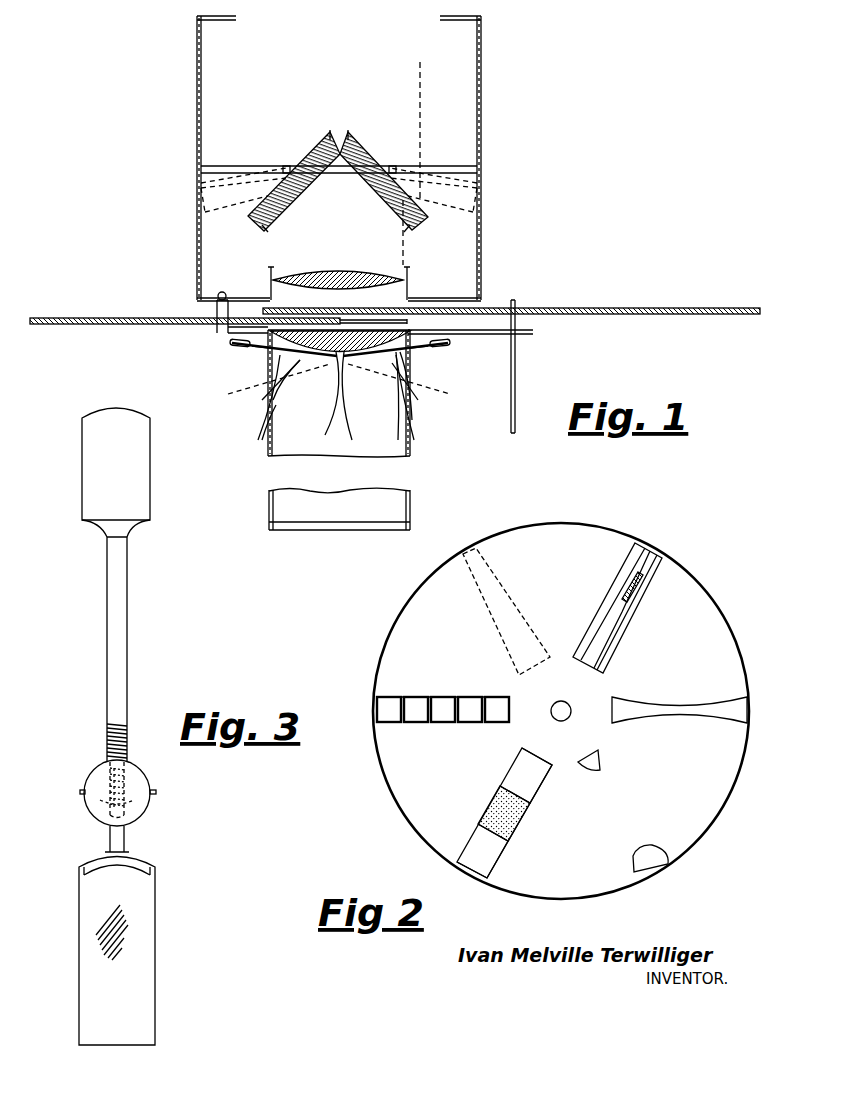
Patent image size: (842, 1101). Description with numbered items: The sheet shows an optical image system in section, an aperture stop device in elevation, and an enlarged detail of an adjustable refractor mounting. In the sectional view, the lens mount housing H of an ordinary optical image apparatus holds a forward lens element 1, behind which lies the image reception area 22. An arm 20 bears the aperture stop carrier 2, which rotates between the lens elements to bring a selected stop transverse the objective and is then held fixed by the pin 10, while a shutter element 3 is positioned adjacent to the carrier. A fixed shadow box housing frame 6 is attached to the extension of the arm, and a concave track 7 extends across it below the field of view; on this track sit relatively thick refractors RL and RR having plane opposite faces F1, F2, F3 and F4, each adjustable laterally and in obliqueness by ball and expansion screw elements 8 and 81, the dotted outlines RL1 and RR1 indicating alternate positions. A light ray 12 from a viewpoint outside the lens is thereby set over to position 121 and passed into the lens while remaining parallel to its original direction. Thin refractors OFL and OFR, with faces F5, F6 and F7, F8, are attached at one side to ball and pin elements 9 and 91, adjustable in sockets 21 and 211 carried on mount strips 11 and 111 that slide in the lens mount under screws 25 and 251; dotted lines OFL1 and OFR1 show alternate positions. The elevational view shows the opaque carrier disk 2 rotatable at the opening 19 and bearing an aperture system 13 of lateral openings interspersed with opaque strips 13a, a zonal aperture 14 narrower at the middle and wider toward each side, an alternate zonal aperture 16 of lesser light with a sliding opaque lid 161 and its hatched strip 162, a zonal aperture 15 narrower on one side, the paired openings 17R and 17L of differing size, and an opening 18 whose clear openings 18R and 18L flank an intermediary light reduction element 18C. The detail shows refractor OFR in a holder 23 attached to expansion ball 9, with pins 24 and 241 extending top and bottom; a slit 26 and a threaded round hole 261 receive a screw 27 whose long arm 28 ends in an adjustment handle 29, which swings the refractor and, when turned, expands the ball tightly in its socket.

In FIG. 1, the forward lens element 1 is at (370, 278).
In FIG. 1, the aperture stop carrier 2 is at (92, 318).
In FIG. 2, the aperture stop carrier 2 is at (436, 583).
In FIG. 1, the shutter element 3 is at (688, 308).
In FIG. 1, the shadow box housing frame 6 is at (197, 86).
In FIG. 1, the concave track 7 is at (240, 170).
In FIG. 1, the ball and expansion screw element 8 is at (410, 150).
In FIG. 1, the ball and expansion screw element 81 is at (286, 166).
In FIG. 1, the expansion ball 9 is at (445, 343).
In FIG. 3, the expansion ball 9 is at (98, 812).
In FIG. 1, the ball and pin element 91 is at (240, 345).
In FIG. 1, the pin 10 is at (213, 312).
In FIG. 1, the mount strip 11 is at (416, 358).
In FIG. 1, the mount strip 111 is at (268, 357).
In FIG. 1, the light ray 12 is at (423, 118).
In FIG. 1, the refracted light ray position 121 is at (405, 262).
In FIG. 2, the aperture system 13 is at (385, 712).
In FIG. 2, the opaque strips 13a is at (390, 705).
In FIG. 2, the zonal aperture 14 is at (712, 712).
In FIG. 2, the zonal aperture 15 is at (493, 598).
In FIG. 2, the alternate zonal aperture 16 is at (656, 568).
In FIG. 2, the lid 161 is at (623, 610).
In FIG. 2, the hatched strip of slot 162 is at (637, 541).
In FIG. 2, the aperture opening 17L is at (600, 762).
In FIG. 2, the aperture opening 17R is at (648, 858).
In FIG. 2, the aperture stop opening 18 is at (481, 790).
In FIG. 2, the light reduction element 18C is at (500, 790).
In FIG. 2, the clear opening 18R is at (485, 855).
In FIG. 2, the clear opening 18L is at (530, 775).
In FIG. 2, the opening 19 is at (569, 704).
In FIG. 1, the arm 20 is at (226, 328).
In FIG. 1, the socket 21 is at (418, 350).
In FIG. 1, the socket 211 is at (262, 350).
In FIG. 1, the image reception area 22 is at (362, 530).
In FIG. 3, the holder 23 is at (140, 857).
In FIG. 3, the pin 24 is at (81, 792).
In FIG. 3, the pin 241 is at (157, 793).
In FIG. 1, the screw 25 is at (418, 368).
In FIG. 1, the screw 251 is at (285, 370).
In FIG. 3, the slit 26 is at (125, 774).
In FIG. 3, the round hole 261 is at (112, 786).
In FIG. 3, the screw 27 is at (108, 745).
In FIG. 3, the arm 28 is at (120, 628).
In FIG. 3, the adjustment handle 29 is at (105, 492).
In FIG. 1, the left forward refractor RL is at (295, 165).
In FIG. 1, the right forward refractor RR is at (380, 158).
In FIG. 1, the alternate position of refractor RL RL1 is at (222, 198).
In FIG. 1, the alternate position of refractor RR RR1 is at (455, 196).
In FIG. 1, the refractor face F1 is at (348, 135).
In FIG. 1, the refractor face F2 is at (331, 135).
In FIG. 1, the refractor face F3 is at (400, 208).
In FIG. 1, the refractor face F4 is at (278, 216).
In FIG. 1, the refractor face F5 is at (340, 383).
In FIG. 1, the refractor face F6 is at (365, 396).
In FIG. 1, the refractor face F7 is at (381, 400).
In FIG. 1, the refractor face F8 is at (289, 400).
In FIG. 1, the lens mount housing H is at (408, 283).
In FIG. 1, the thin refractor OFL is at (275, 402).
In FIG. 1, the alternate position of refractor OFL OFL1 is at (270, 430).
In FIG. 1, the thin refractor OFR is at (412, 420).
In FIG. 3, the thin refractor OFR is at (112, 955).
In FIG. 1, the alternate position of refractor OFR OFR1 is at (400, 440).